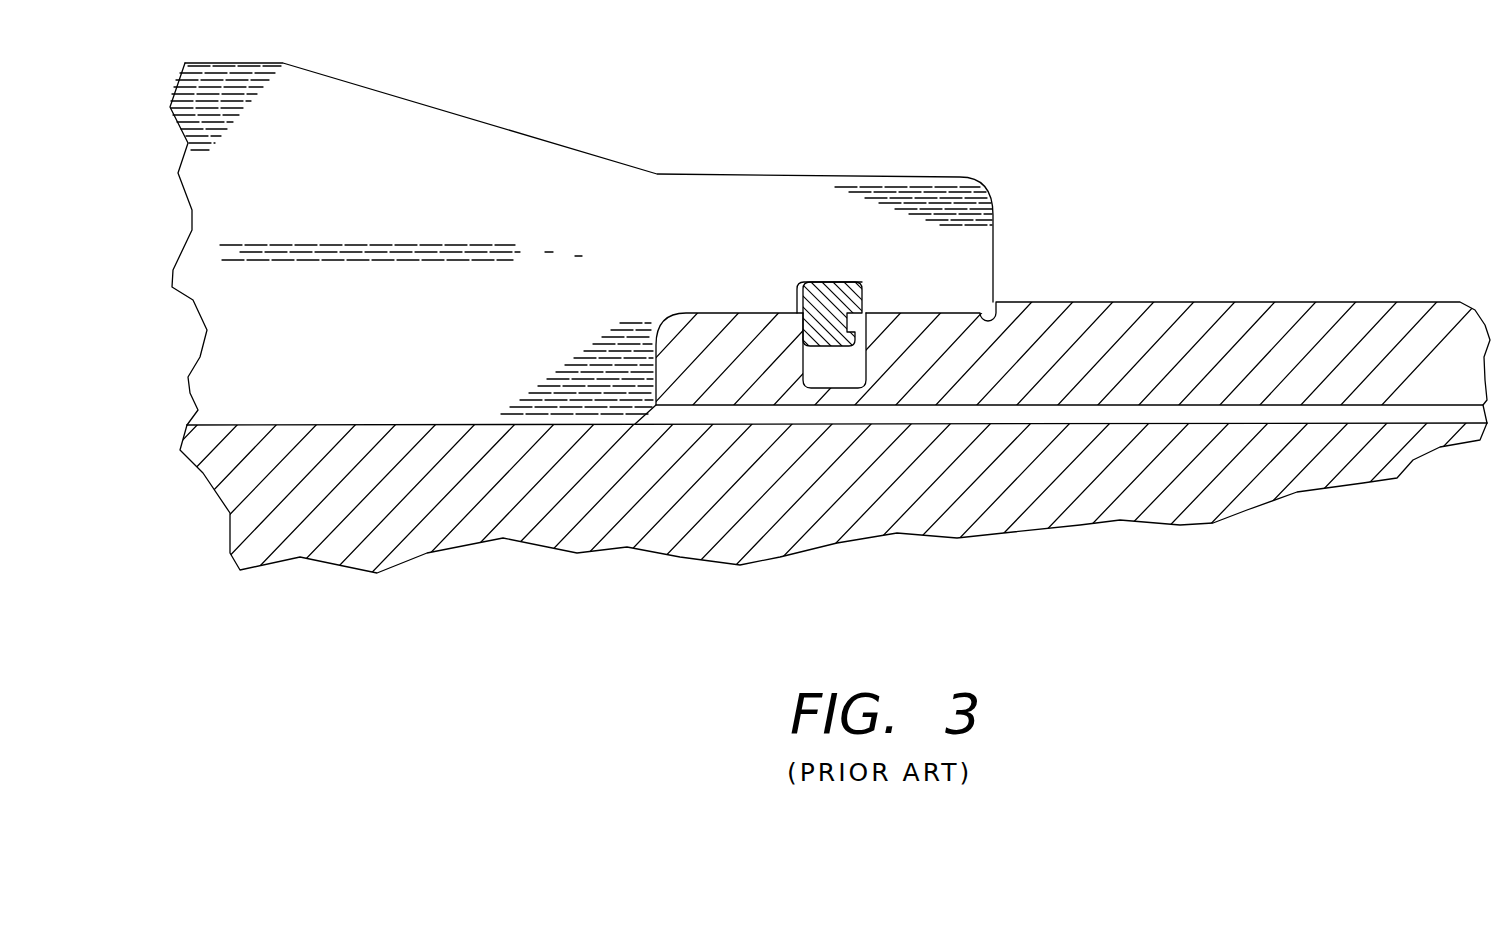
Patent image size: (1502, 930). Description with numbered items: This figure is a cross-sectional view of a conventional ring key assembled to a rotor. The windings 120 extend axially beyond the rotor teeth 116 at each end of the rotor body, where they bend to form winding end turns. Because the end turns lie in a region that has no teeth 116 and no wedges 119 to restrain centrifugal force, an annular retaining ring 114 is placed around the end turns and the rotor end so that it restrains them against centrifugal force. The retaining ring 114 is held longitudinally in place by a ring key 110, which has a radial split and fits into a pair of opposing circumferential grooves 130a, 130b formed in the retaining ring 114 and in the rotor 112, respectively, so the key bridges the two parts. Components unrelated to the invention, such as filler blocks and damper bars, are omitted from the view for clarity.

The ring key 110 is at (833, 302).
The rotor 112 is at (993, 500).
The retaining ring 114 is at (397, 143).
The rotor teeth 116 is at (1023, 325).
The wedges 119 is at (1367, 342).
The windings 120 is at (1168, 470).
The circumferential groove in the retaining ring 130a is at (797, 283).
The circumferential groove in the rotor 130b is at (845, 367).